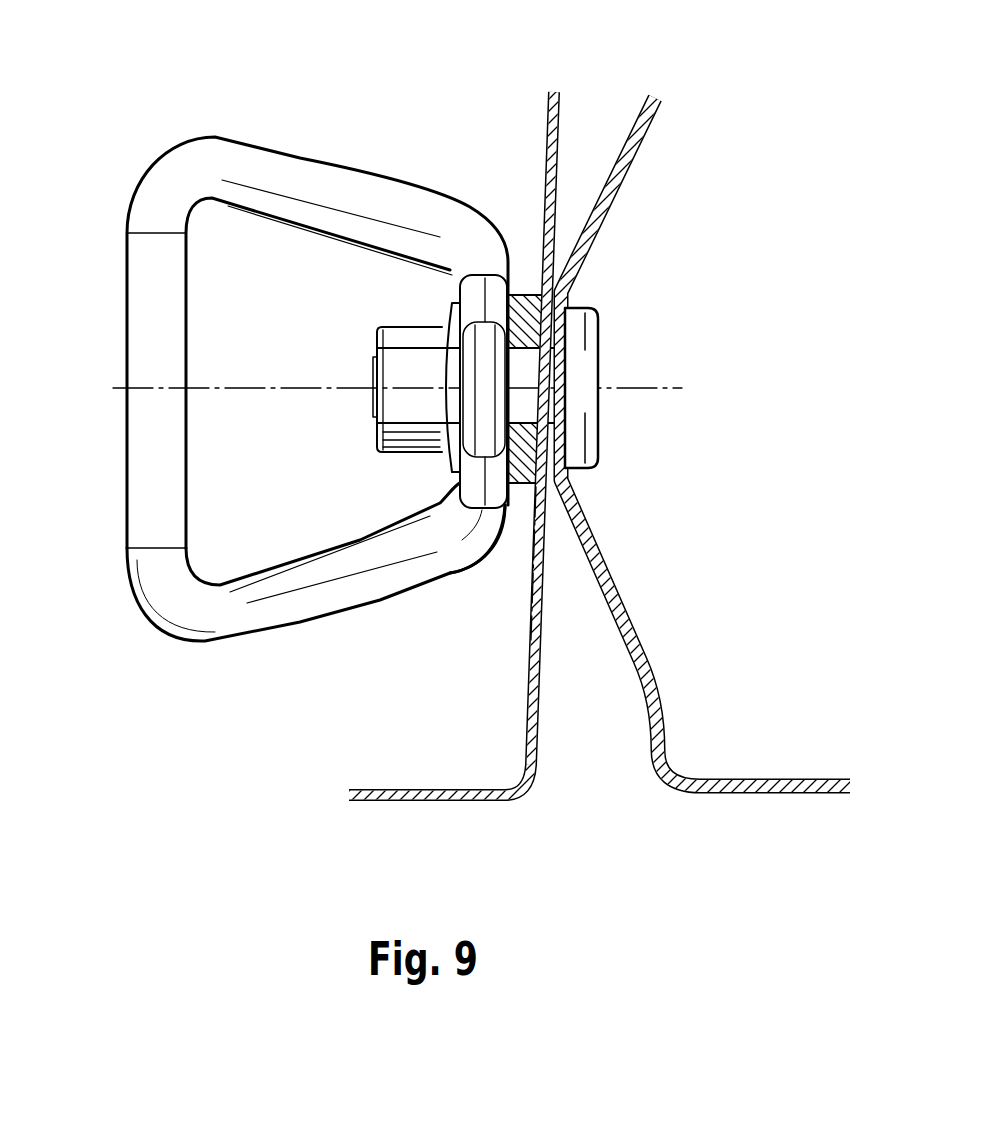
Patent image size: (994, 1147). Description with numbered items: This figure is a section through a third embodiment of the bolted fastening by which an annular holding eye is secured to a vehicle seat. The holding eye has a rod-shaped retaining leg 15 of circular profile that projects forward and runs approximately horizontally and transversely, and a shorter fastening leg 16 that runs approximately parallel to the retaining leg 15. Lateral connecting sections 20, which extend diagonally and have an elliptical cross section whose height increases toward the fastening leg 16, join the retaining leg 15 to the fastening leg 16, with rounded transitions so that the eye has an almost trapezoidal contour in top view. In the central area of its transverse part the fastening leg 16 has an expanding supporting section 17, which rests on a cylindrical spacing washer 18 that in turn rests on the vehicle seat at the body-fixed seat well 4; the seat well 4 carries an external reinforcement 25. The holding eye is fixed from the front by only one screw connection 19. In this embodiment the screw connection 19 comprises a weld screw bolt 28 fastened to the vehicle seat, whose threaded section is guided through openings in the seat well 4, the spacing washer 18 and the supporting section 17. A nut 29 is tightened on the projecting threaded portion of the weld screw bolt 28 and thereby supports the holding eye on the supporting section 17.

The seat well 4 is at (563, 118).
The retaining leg 15 is at (137, 300).
The fastening leg 16 is at (470, 300).
The supporting section 17 is at (468, 483).
The spacing washer 18 is at (533, 280).
The screw connection 19 is at (373, 408).
The connecting sections 20 is at (343, 180).
The external reinforcement 25 is at (653, 133).
The weld screw bolt 28 is at (598, 357).
The nut 29 is at (398, 447).